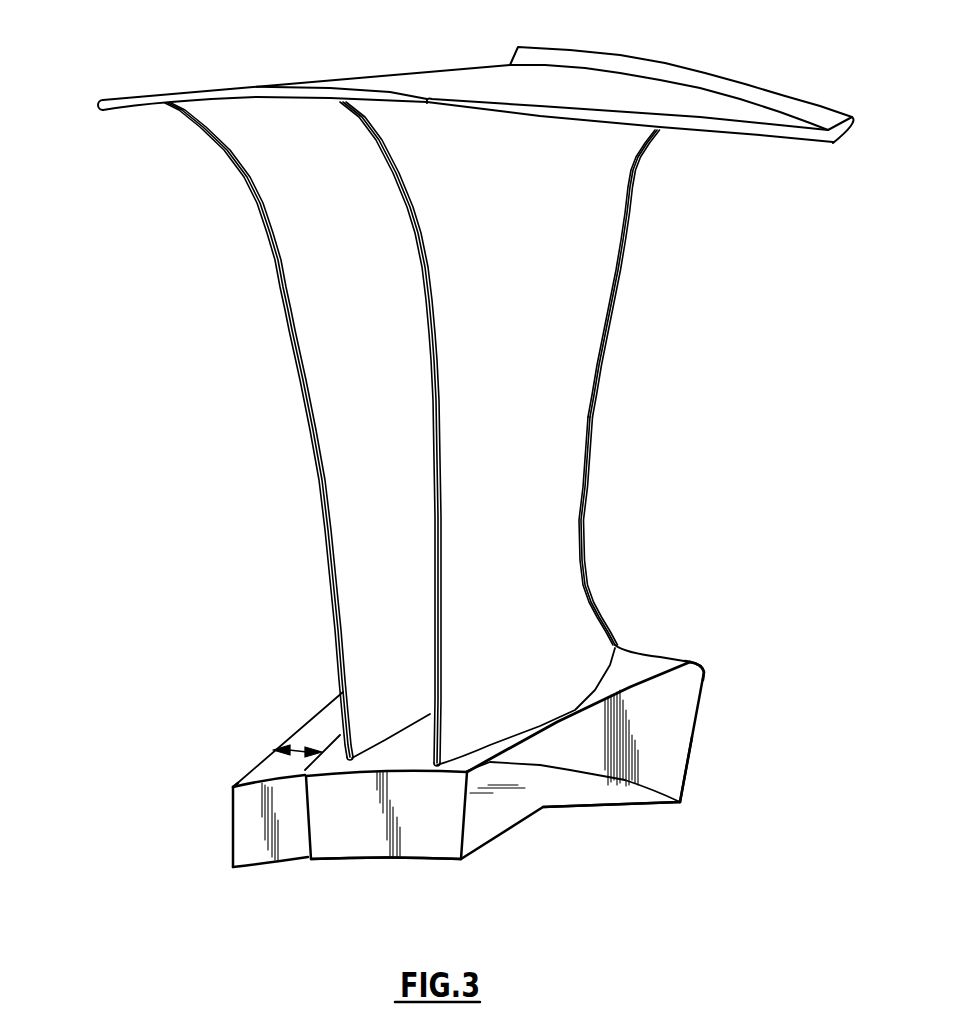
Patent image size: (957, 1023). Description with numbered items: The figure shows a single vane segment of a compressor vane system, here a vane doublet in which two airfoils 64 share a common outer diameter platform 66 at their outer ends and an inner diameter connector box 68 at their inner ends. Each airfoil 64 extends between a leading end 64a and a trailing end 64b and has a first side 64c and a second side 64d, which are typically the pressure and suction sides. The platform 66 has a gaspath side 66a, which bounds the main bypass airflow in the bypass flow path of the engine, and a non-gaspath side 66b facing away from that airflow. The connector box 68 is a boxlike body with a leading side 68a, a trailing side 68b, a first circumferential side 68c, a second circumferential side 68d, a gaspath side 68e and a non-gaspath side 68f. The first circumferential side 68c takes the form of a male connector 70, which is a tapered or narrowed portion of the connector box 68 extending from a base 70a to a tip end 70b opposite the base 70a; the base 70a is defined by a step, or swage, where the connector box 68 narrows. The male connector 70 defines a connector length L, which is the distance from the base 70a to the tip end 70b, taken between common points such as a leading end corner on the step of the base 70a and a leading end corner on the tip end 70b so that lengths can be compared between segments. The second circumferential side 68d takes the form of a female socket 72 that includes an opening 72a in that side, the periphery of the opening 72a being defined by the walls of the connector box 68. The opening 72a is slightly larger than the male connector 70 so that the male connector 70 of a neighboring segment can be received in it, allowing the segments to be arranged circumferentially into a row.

The airfoil 64 is at (423, 434).
The leading end 64a is at (437, 531).
The trailing end 64b is at (588, 458).
The first side 64c is at (487, 347).
The second side 64d is at (545, 372).
The outer diameter platform 66 is at (459, 114).
The gaspath side 66a is at (135, 112).
The non-gaspath side 66b is at (441, 80).
The inner diameter connector box 68 is at (469, 768).
The leading side 68a is at (430, 843).
The trailing side 68b is at (673, 653).
The first circumferential side 68c is at (233, 787).
The second circumferential side 68d is at (684, 777).
The gaspath side 68e is at (633, 668).
The non-gaspath side 68f is at (368, 859).
The male connector 70 is at (270, 790).
The base 70a is at (333, 742).
The tip end 70b is at (268, 765).
The female socket 72 is at (607, 765).
The opening 72a is at (512, 814).
The connector length L is at (298, 750).